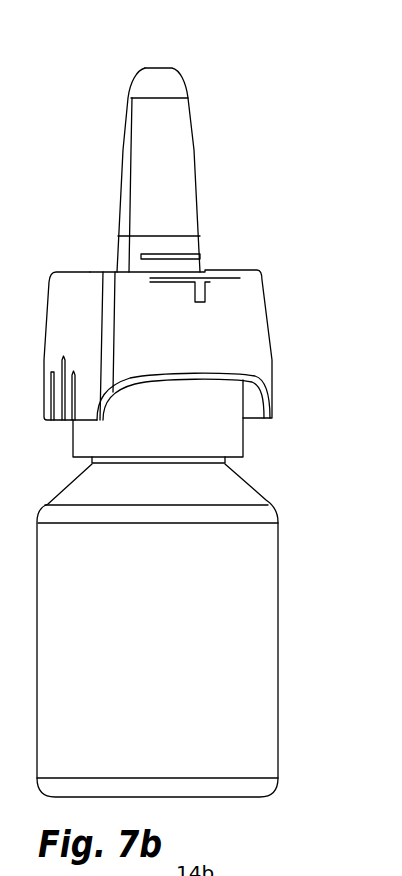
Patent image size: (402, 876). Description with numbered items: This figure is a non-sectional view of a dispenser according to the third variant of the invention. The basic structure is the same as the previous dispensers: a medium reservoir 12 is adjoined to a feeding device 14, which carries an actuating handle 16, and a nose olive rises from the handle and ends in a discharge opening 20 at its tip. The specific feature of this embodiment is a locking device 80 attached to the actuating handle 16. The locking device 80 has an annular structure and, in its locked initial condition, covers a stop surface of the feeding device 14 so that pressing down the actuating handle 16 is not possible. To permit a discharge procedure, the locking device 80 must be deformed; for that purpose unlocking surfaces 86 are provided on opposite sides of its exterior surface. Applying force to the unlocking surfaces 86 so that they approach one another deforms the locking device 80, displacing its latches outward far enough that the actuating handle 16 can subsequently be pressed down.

The discharge opening 20 is at (160, 68).
The locking device 80 is at (240, 332).
The actuating handle 16 is at (220, 266).
The unlocking surfaces 86 is at (62, 421).
The feeding device 14 is at (215, 442).
The medium reservoir 12 is at (222, 698).